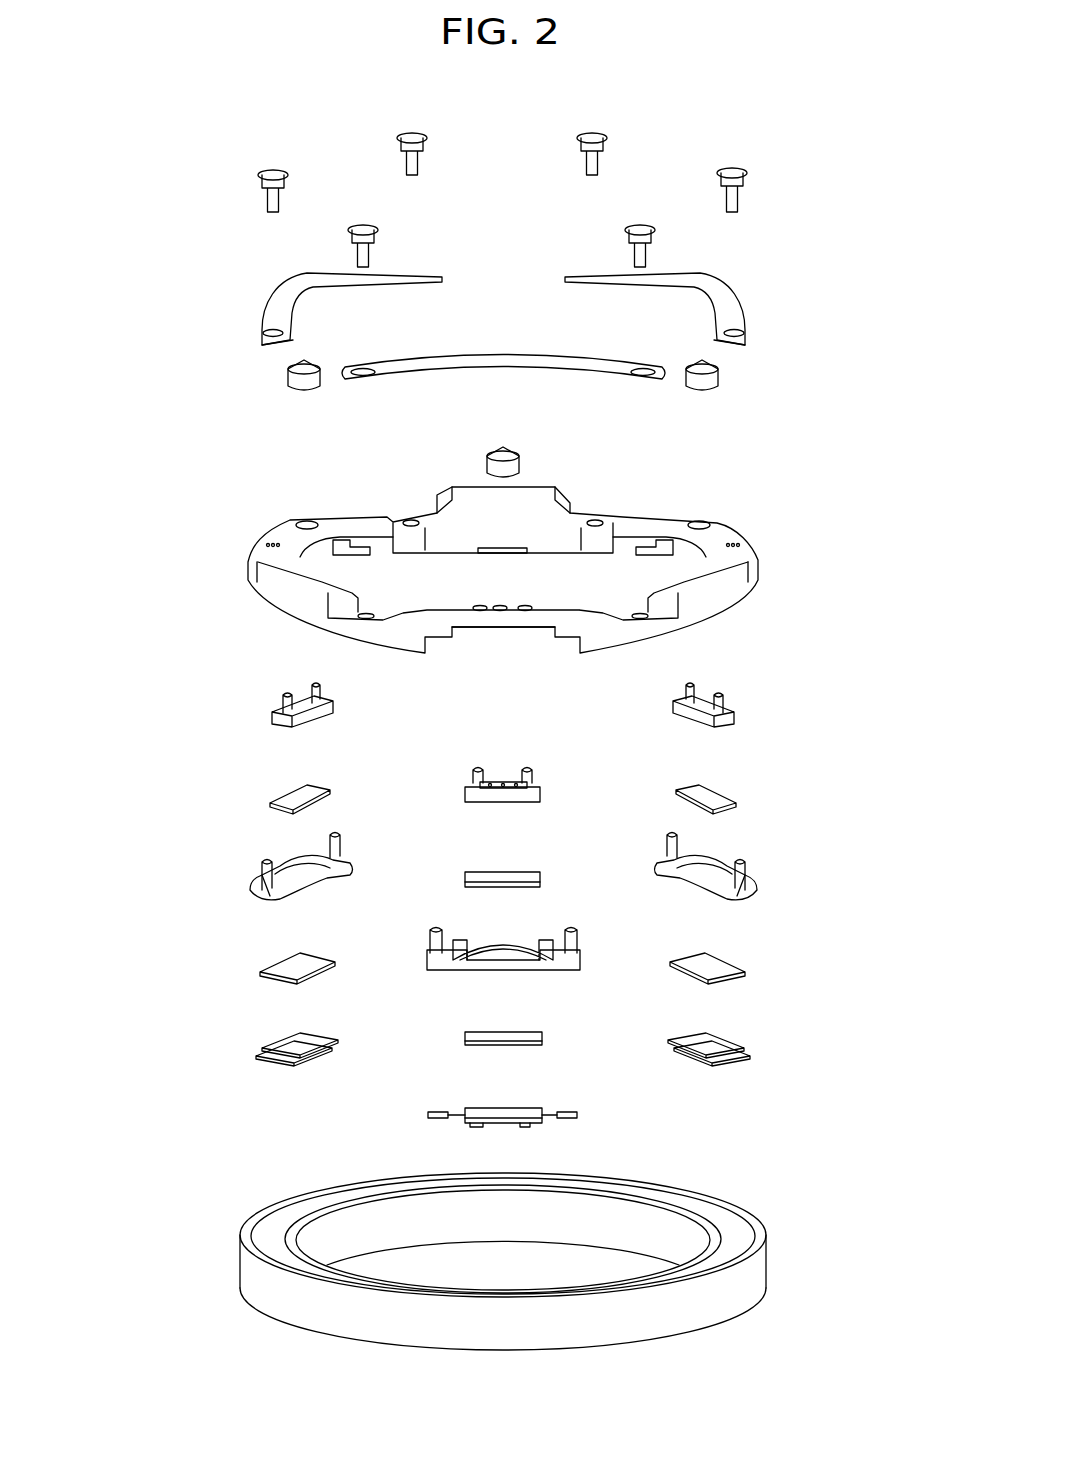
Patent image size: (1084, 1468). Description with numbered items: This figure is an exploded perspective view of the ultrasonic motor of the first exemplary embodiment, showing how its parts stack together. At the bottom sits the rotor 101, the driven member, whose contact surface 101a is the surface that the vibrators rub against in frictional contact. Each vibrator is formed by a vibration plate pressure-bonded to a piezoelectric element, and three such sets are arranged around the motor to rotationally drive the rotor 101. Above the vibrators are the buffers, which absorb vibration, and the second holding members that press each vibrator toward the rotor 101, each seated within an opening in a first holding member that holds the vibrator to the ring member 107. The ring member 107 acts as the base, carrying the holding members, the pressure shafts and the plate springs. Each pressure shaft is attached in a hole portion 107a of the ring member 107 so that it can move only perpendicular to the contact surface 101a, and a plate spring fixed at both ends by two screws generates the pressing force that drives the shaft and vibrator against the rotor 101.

The rotor 101 is at (325, 1325).
The contact surface 101a is at (717, 1212).
The ring member 107 is at (277, 610).
The hole portion 107a is at (498, 614).